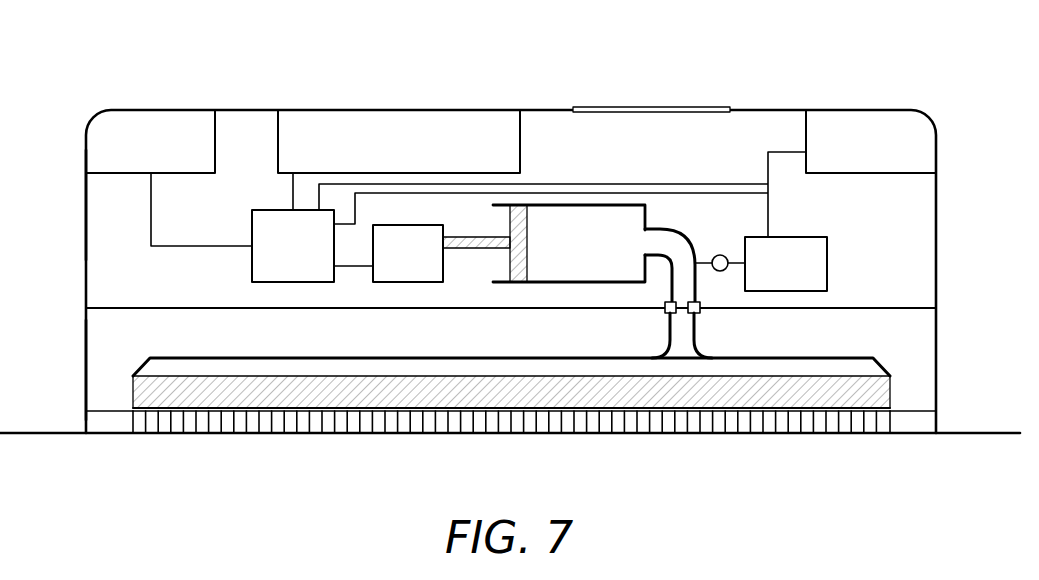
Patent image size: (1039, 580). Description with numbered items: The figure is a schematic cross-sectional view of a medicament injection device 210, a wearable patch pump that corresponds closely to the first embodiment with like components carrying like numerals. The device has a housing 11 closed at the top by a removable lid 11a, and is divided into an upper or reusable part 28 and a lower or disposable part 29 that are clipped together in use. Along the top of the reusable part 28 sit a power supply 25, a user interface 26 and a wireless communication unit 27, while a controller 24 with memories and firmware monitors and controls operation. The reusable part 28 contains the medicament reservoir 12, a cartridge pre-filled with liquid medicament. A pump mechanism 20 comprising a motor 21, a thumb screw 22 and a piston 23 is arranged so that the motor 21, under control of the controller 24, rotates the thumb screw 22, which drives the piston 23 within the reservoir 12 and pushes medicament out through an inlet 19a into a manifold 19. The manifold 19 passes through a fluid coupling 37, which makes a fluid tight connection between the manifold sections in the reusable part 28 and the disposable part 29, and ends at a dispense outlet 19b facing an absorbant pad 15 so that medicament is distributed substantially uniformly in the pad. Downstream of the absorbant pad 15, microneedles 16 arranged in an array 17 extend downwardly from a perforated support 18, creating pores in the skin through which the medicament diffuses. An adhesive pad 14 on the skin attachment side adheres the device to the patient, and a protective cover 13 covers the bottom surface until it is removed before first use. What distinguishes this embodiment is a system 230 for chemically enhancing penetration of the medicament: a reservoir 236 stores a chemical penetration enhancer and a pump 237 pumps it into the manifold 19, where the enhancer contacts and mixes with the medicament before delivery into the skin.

The medicament injection device 210 is at (94, 91).
The housing 11 is at (86, 265).
The lid 11a is at (638, 107).
The reusable part 28 is at (86, 207).
The disposable part 29 is at (86, 360).
The power supply 25 is at (181, 119).
The user interface 26 is at (400, 119).
The wireless communication unit 27 is at (843, 119).
The controller 24 is at (296, 276).
The motor 21 is at (410, 276).
The thumb screw 22 is at (462, 243).
The piston 23 is at (527, 261).
The medicament reservoir 12 is at (582, 213).
The pump mechanism 20 is at (484, 270).
The inlet 19a is at (650, 242).
The manifold 19 is at (700, 318).
The fluid coupling 37 is at (665, 312).
The dispense outlet 19b is at (872, 365).
The absorbant pad 15 is at (880, 393).
The adhesive pad 14 is at (110, 426).
The microneedles 16 is at (383, 437).
The array 17 is at (308, 448).
The support 18 is at (802, 414).
The protective cover 13 is at (985, 437).
The pump 237 is at (720, 255).
The reservoir 236 is at (827, 253).
The system 230 is at (843, 280).